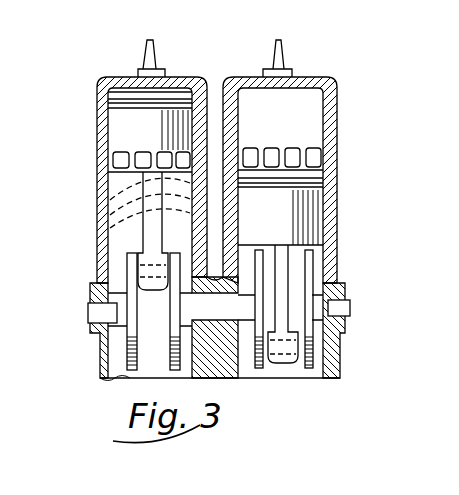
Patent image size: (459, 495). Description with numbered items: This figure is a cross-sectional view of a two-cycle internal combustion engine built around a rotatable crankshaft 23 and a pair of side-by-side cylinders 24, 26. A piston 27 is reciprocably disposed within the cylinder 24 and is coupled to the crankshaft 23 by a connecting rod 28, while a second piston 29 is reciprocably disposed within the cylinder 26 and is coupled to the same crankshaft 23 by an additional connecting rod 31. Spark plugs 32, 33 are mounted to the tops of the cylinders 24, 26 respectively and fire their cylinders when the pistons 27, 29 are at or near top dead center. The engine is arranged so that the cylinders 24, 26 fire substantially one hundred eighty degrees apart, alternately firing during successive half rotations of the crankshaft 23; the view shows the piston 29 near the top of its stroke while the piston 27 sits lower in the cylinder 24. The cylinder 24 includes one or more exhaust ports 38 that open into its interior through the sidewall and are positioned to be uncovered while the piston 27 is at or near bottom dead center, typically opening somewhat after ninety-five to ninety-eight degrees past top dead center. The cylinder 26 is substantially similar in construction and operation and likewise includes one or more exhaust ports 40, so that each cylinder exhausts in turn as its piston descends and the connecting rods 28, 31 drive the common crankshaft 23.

The crankshaft 23 is at (343, 303).
The cylinder 24 is at (337, 98).
The cylinder 26 is at (106, 103).
The piston 27 is at (298, 195).
The connecting rod 28 is at (282, 272).
The piston 29 is at (107, 140).
The connecting rod 31 is at (108, 232).
The spark plug 32 is at (285, 63).
The spark plug 33 is at (145, 50).
The exhaust ports 38 is at (315, 150).
The exhaust ports 40 is at (110, 210).